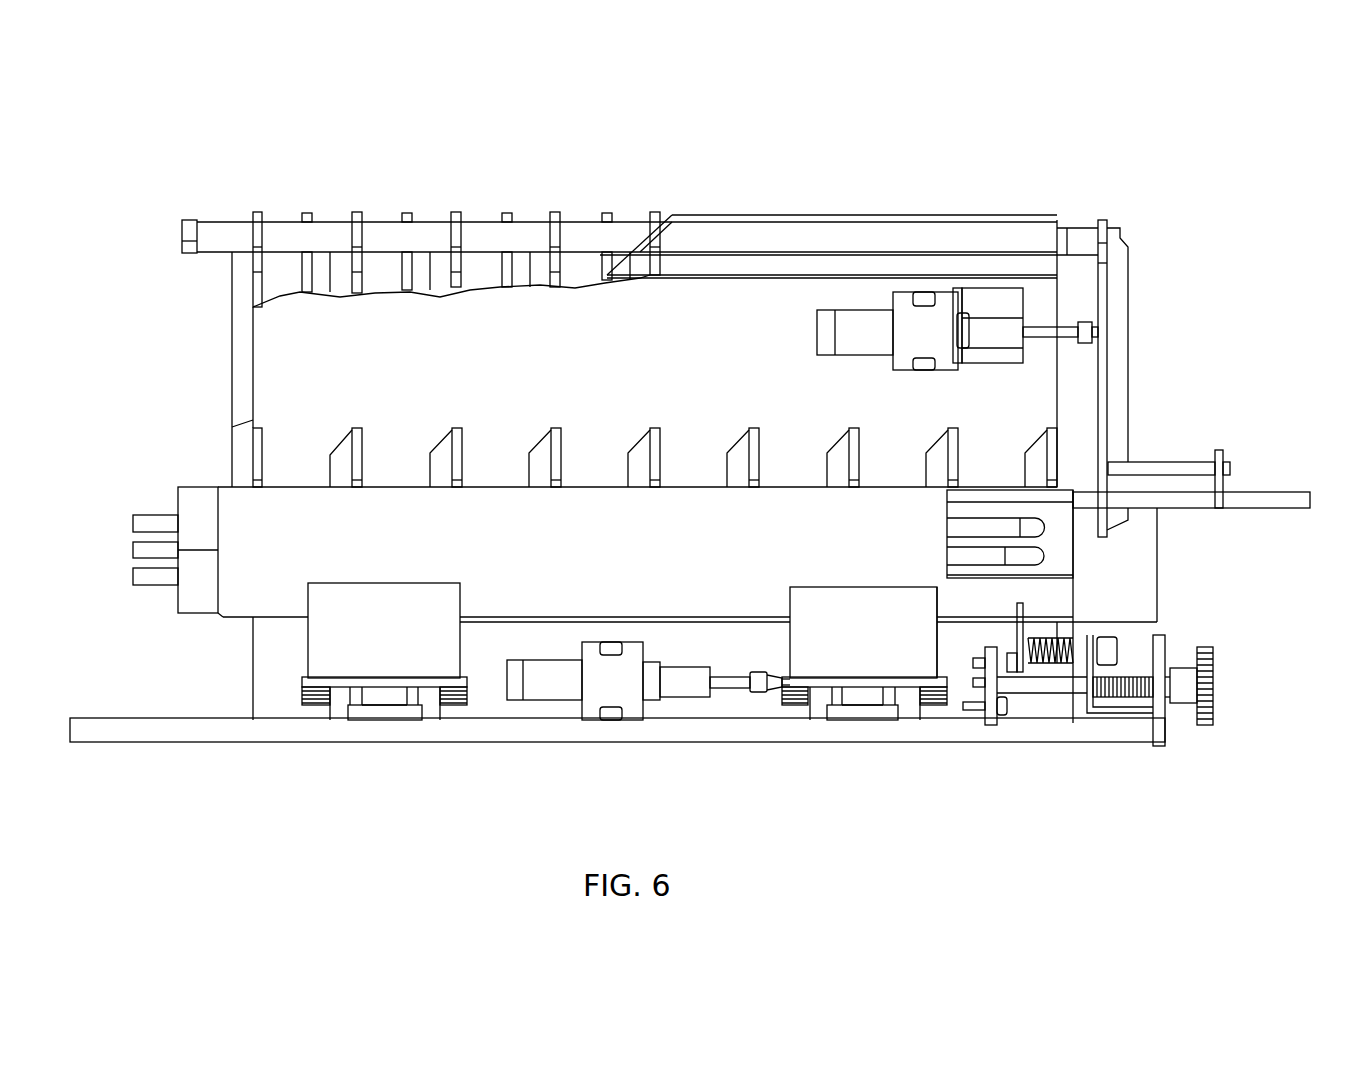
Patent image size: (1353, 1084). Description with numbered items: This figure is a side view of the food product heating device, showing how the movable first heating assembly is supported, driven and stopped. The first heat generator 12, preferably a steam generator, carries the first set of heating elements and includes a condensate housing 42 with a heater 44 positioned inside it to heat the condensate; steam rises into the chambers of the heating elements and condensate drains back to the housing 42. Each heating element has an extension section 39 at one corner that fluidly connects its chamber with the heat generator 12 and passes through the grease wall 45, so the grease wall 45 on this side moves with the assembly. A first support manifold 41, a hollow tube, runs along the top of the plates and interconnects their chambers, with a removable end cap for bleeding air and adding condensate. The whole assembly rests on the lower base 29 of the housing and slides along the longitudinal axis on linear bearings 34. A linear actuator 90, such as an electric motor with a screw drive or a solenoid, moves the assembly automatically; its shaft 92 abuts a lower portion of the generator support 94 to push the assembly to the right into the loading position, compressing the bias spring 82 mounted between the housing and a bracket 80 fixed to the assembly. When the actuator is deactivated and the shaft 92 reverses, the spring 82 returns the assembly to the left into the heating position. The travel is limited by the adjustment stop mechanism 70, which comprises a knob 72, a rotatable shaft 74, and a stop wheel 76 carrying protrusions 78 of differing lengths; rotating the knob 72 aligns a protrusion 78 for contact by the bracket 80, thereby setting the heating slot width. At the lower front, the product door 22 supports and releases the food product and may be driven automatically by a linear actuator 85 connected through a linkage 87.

The heat generator 12 is at (222, 614).
The product door 22 is at (1252, 489).
The lower base 29 is at (253, 733).
The linear bearings 34 is at (383, 708).
The extension section 39 is at (437, 450).
The first support manifold 41 is at (333, 240).
The condensate housing 42 is at (258, 588).
The heater 44 is at (1036, 526).
The grease wall 45 is at (305, 365).
The adjustment stop mechanism 70 is at (1205, 728).
The knob 72 is at (1213, 668).
The rotatable shaft 74 is at (1060, 690).
The stop wheel 76 is at (990, 705).
The protrusions 78 is at (998, 688).
The bracket 80 is at (1025, 620).
The bias spring 82 is at (1080, 620).
The linear actuator 85 is at (976, 296).
The linkage 87 is at (1162, 463).
The linear actuator 90 is at (597, 709).
The shaft 92 is at (735, 687).
The generator support 94 is at (812, 648).